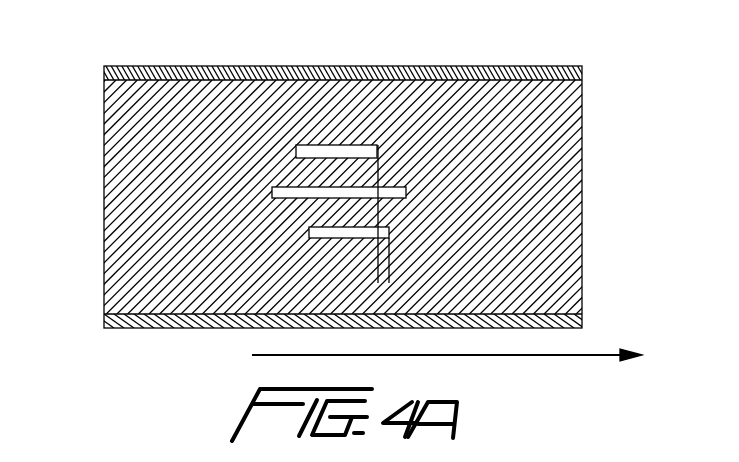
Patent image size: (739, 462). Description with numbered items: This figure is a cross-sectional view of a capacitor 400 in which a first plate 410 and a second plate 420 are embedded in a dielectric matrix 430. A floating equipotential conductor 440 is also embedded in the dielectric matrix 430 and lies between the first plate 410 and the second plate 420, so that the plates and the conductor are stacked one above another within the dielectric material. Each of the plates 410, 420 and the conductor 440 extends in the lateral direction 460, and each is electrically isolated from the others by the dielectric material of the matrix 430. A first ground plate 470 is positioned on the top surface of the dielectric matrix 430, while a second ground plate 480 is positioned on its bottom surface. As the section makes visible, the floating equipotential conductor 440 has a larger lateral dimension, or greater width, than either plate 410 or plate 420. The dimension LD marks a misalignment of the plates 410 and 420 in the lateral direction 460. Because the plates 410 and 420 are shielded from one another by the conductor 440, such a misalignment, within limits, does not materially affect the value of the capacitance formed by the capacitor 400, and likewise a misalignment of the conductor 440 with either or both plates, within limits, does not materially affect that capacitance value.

The capacitor 400 is at (527, 32).
The first plate 410 is at (377, 150).
The second plate 420 is at (308, 233).
The dielectric matrix 430 is at (213, 128).
The floating equipotential conductor 440 is at (407, 191).
The lateral direction 460 is at (466, 356).
The first ground plate 470 is at (150, 66).
The second ground plate 480 is at (157, 328).
The lateral misalignment LD is at (338, 275).